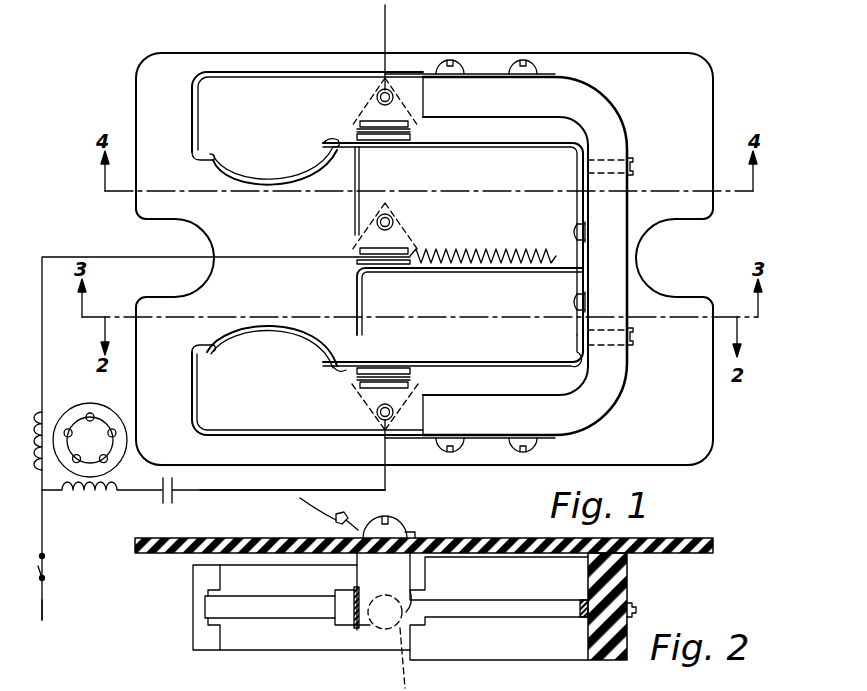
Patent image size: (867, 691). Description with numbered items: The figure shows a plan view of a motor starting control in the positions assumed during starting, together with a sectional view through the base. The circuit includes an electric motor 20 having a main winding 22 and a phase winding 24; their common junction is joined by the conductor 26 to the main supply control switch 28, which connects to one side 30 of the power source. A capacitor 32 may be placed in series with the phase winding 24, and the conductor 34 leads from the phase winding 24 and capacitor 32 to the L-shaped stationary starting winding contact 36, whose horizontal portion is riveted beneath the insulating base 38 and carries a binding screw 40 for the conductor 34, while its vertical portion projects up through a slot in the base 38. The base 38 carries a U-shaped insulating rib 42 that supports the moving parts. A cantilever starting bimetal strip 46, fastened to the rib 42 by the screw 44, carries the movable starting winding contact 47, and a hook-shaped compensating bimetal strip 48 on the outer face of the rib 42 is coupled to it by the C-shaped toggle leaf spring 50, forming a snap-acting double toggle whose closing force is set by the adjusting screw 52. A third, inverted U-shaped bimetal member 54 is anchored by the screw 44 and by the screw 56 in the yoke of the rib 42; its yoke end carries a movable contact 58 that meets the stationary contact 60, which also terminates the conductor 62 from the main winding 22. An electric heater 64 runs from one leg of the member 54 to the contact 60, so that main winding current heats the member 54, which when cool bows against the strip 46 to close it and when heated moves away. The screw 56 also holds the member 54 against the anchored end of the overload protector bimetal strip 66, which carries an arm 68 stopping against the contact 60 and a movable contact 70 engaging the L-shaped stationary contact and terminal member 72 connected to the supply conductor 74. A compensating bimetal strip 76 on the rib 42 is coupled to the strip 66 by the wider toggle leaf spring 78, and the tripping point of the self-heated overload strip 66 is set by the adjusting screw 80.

In FIG. 1, the electric motor 20 is at (103, 412).
In FIG. 1, the main winding 22 is at (62, 404).
In FIG. 1, the phase winding 24 is at (95, 500).
In FIG. 1, the conductor 26 is at (45, 556).
In FIG. 1, the main supply control switch 28 is at (46, 578).
In FIG. 1, the side of the power source 30 is at (45, 612).
In FIG. 1, the capacitor 32 is at (176, 496).
In FIG. 1, the conductor 34 is at (278, 500).
In FIG. 1, the stationary starting winding contact 36 is at (357, 378).
In FIG. 2, the stationary starting winding contact 36 is at (415, 537).
In FIG. 1, the base 38 is at (700, 410).
In FIG. 2, the base 38 is at (714, 545).
In FIG. 2, the binding screw 40 is at (396, 520).
In FIG. 1, the U-shaped rib 42 is at (612, 398).
In FIG. 2, the U-shaped rib 42 is at (612, 660).
In FIG. 1, the screw 44 is at (575, 300).
In FIG. 1, the starting bimetal strip 46 is at (476, 366).
In FIG. 2, the starting bimetal strip 46 is at (505, 610).
In FIG. 1, the movable starting winding contact 47 is at (410, 372).
In FIG. 2, the movable starting winding contact 47 is at (400, 639).
In FIG. 1, the temperature compensating bimetal strip 48 is at (405, 460).
In FIG. 2, the temperature compensating bimetal strip 48 is at (200, 640).
In FIG. 1, the toggle leaf spring 50 is at (250, 337).
In FIG. 2, the toggle leaf spring 50 is at (215, 603).
In FIG. 1, the adjusting screw 52 is at (633, 342).
In FIG. 2, the adjusting screw 52 is at (632, 605).
In FIG. 1, the third bimetal member 54 is at (430, 272).
In FIG. 2, the third bimetal member 54 is at (355, 595).
In FIG. 1, the screw 56 is at (575, 232).
In FIG. 1, the movable contact 58 is at (357, 266).
In FIG. 1, the stationary contact 60 is at (395, 248).
In FIG. 1, the conductor 62 is at (134, 243).
In FIG. 1, the electric heater 64 is at (490, 250).
In FIG. 1, the overload protector bimetal strip 66 is at (510, 148).
In FIG. 1, the arm 68 is at (355, 200).
In FIG. 1, the movable contact 70 is at (405, 137).
In FIG. 1, the stationary contact and terminal member 72 is at (365, 128).
In FIG. 1, the supply conductor 74 is at (388, 24).
In FIG. 1, the compensating bimetal strip 76 is at (262, 73).
In FIG. 1, the toggle leaf spring 78 is at (250, 185).
In FIG. 1, the adjusting screw 80 is at (632, 162).